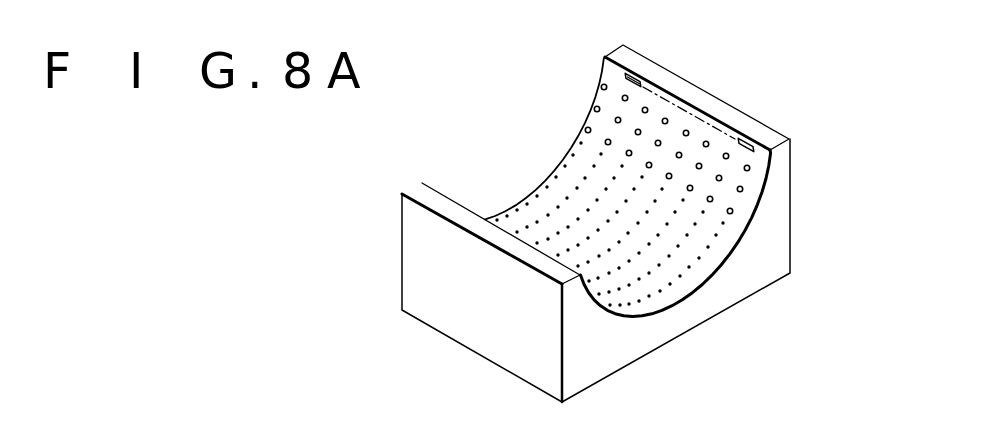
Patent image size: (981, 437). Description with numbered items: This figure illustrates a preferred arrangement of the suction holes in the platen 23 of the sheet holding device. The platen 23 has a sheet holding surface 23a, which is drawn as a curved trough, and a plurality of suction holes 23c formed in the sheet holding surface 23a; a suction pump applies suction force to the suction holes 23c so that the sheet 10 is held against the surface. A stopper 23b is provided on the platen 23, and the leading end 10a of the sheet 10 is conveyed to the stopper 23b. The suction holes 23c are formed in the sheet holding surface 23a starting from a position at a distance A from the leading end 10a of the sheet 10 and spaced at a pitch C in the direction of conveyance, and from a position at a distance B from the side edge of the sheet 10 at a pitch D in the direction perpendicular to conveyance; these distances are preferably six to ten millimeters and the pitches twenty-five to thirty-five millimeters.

The platen 23 is at (783, 192).
The sheet holding surface 23a is at (757, 155).
The stopper 23b is at (641, 77).
The suction holes 23c is at (754, 172).
The sheet 10 is at (681, 107).
The leading end of the sheet 10a is at (631, 70).